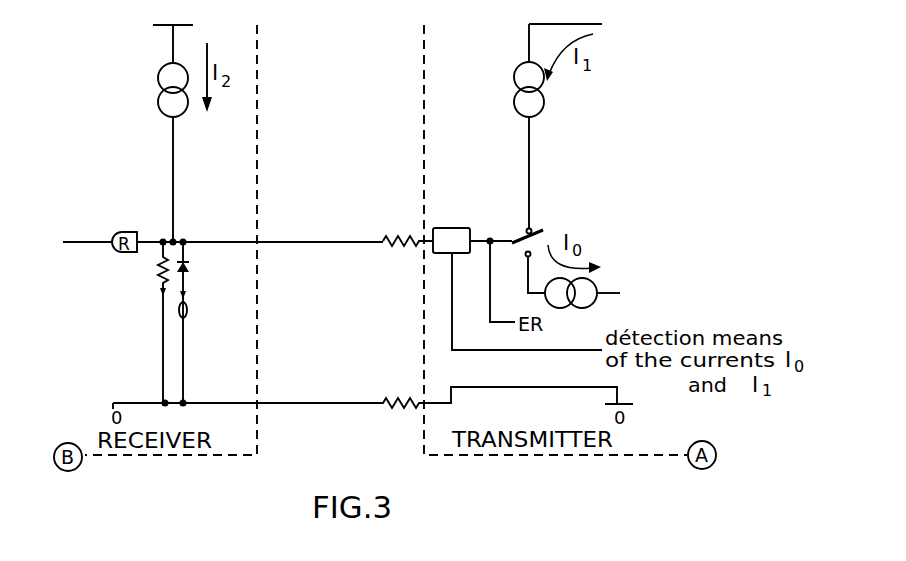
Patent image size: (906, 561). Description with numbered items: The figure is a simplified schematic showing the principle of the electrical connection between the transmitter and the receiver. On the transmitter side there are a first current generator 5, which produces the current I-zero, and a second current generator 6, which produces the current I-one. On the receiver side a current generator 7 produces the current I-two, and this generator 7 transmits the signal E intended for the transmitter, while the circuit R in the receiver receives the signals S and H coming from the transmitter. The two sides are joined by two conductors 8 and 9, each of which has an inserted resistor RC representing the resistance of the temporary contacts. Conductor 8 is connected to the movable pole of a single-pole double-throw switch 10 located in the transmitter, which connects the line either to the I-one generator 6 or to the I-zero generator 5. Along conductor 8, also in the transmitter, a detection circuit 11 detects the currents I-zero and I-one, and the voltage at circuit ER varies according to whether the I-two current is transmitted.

The first current generator 5 is at (570, 311).
The second current generator 6 is at (508, 88).
The current generator 7 is at (158, 89).
The conductor 8 is at (318, 246).
The conductor 9 is at (328, 400).
The single-pole double-throw switch 10 is at (525, 231).
The detection circuit 11 is at (452, 228).